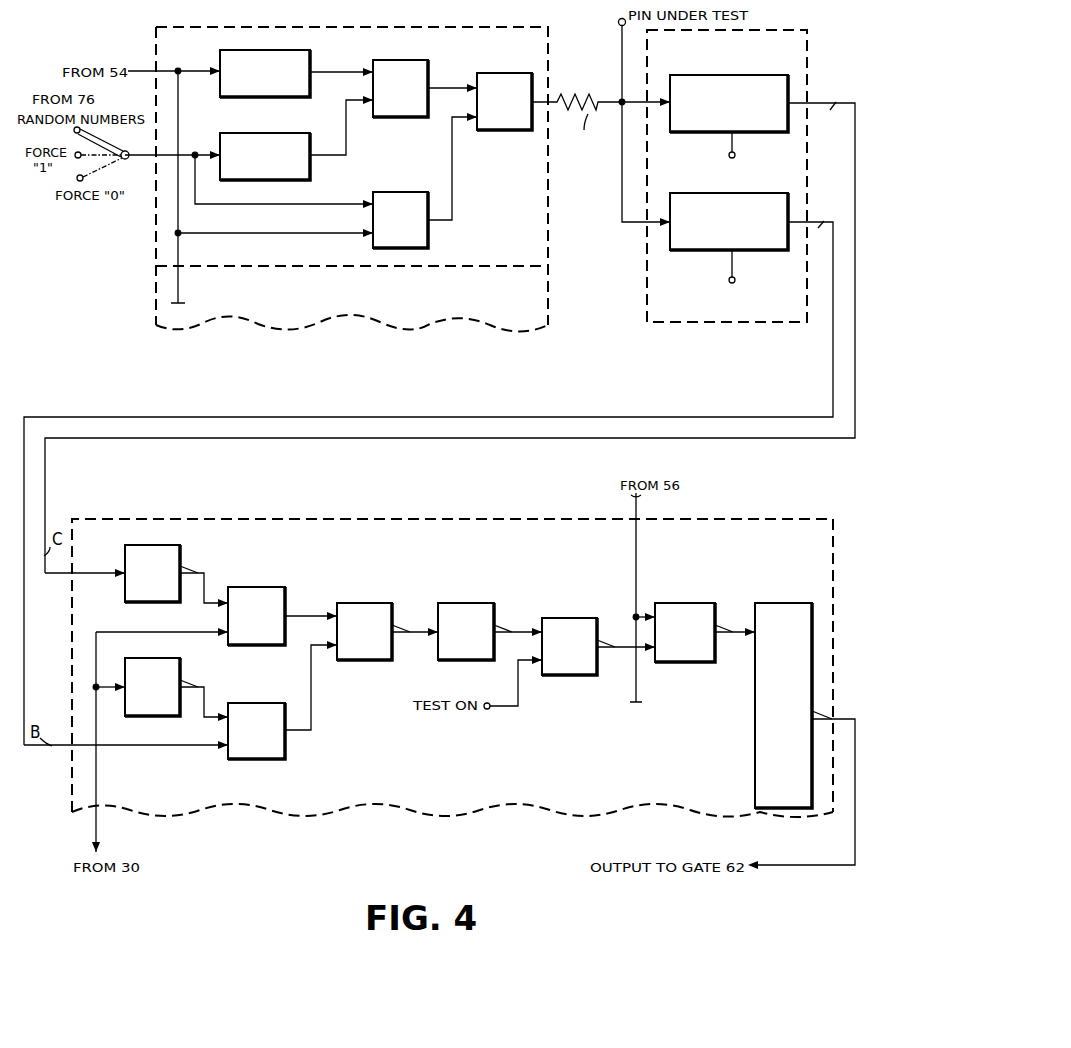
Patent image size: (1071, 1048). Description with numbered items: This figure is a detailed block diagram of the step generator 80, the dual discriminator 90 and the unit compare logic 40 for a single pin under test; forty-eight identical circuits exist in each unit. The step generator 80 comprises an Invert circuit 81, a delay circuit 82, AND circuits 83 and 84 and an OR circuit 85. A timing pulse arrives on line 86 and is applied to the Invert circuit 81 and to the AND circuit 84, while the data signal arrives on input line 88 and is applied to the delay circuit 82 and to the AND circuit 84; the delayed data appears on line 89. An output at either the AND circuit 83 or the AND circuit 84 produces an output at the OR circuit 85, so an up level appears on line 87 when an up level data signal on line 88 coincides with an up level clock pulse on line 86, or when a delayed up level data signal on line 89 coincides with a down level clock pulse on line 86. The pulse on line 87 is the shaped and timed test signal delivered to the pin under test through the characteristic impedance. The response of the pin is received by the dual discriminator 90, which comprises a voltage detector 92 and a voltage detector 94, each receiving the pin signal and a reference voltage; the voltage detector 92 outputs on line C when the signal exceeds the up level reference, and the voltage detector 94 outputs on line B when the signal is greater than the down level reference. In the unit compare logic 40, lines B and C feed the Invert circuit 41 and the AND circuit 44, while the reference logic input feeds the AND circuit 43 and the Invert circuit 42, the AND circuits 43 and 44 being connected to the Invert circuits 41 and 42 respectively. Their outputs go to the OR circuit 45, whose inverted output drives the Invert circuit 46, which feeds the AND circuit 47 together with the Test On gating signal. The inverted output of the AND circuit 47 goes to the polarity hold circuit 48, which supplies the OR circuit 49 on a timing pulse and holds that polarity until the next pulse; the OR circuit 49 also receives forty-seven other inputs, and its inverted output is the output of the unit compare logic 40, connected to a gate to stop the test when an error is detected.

The unit compare logic 40 is at (388, 516).
The Invert circuit 41 is at (180, 549).
The Invert circuit 42 is at (176, 675).
The AND circuit 43 is at (280, 588).
The AND circuit 44 is at (268, 706).
The OR circuit 45 is at (385, 603).
The Invert circuit 46 is at (480, 603).
The AND circuit 47 is at (578, 618).
The polarity hold circuit 48 is at (690, 603).
The OR circuit 49 is at (778, 603).
The step generator 80 is at (548, 258).
The Invert circuit 81 is at (287, 97).
The delay circuit 82 is at (308, 180).
The AND circuit 83 is at (424, 66).
The AND circuit 84 is at (428, 241).
The OR circuit 85 is at (509, 130).
The line 86 is at (170, 66).
The line 87 is at (548, 96).
The input line 88 is at (168, 165).
The line 89 is at (350, 154).
The dual discriminator 90 is at (646, 245).
The voltage detector 92 is at (758, 132).
The voltage detector 94 is at (689, 251).